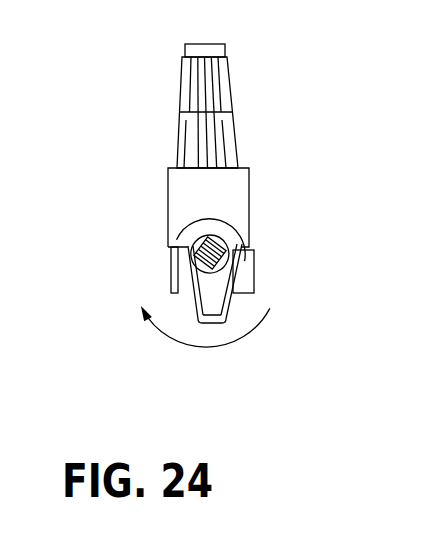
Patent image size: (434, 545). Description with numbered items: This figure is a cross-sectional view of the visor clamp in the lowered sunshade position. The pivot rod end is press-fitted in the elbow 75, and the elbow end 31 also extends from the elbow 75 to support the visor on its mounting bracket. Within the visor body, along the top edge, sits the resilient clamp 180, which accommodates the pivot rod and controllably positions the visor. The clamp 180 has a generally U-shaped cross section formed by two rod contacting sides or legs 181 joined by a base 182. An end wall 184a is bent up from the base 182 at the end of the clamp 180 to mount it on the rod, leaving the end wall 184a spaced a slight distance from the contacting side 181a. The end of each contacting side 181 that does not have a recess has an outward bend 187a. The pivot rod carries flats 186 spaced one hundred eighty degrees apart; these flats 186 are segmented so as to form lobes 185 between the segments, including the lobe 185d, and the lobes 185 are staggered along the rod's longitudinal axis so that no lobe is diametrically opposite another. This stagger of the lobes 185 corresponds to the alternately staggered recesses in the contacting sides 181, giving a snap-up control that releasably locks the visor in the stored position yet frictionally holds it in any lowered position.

The elbow end 31 is at (212, 82).
The elbow 75 is at (232, 190).
The resilient clamp 180 is at (218, 326).
The rod contacting sides or legs 181 is at (228, 310).
The contacting side 181a is at (190, 303).
The base 182 is at (207, 315).
The end wall 184a is at (237, 238).
The lobes 185 is at (236, 234).
The lobe 185d is at (200, 256).
The flats 186 is at (219, 236).
The outward bend 187a is at (246, 272).